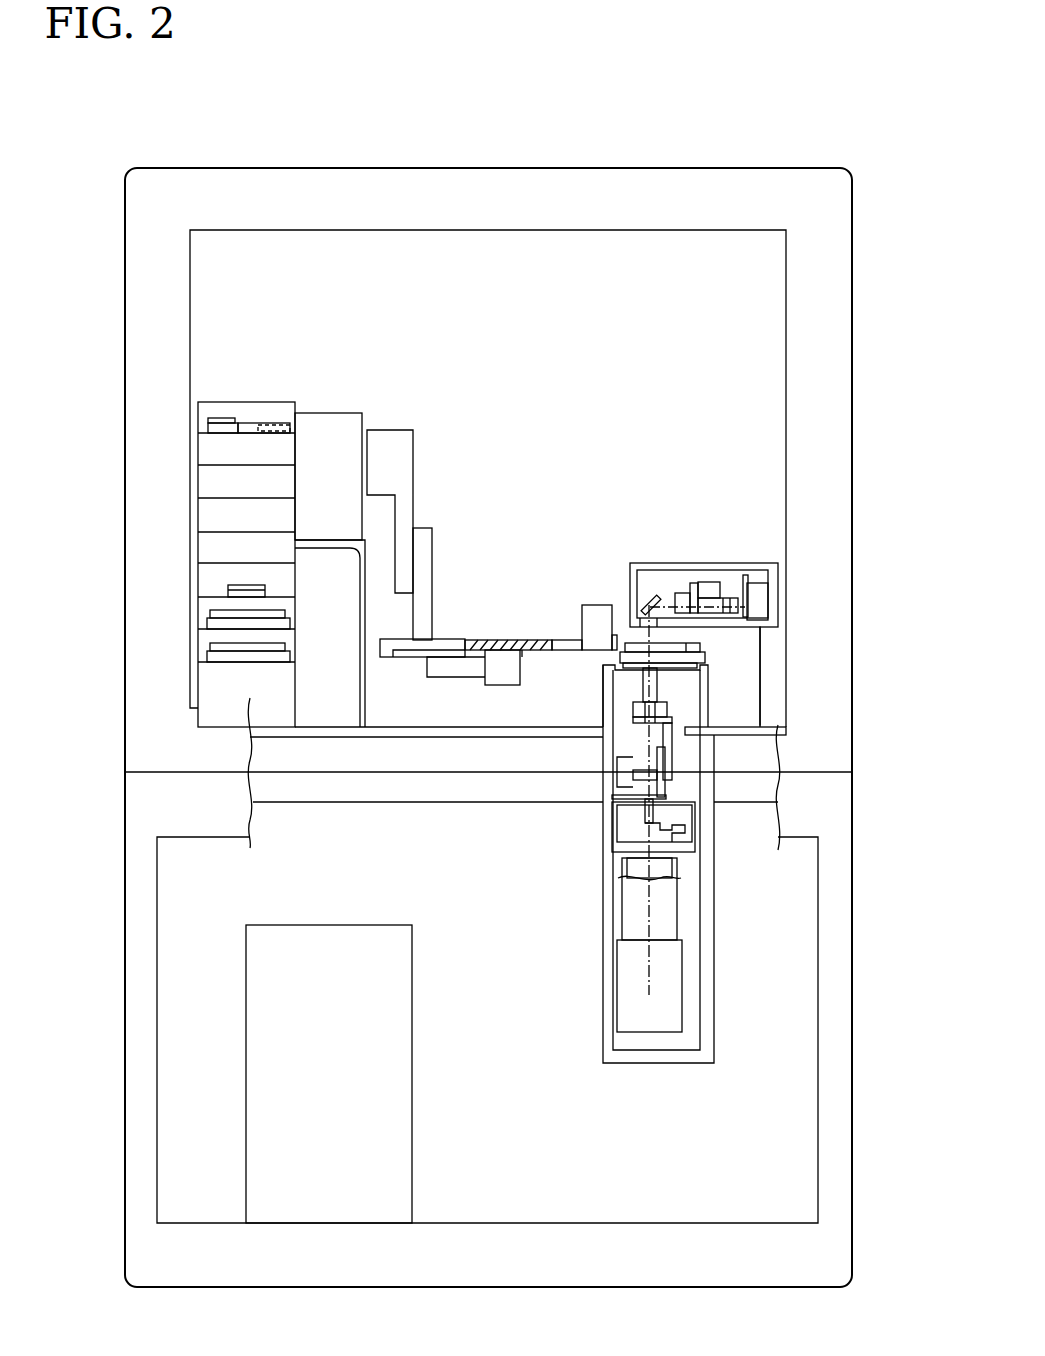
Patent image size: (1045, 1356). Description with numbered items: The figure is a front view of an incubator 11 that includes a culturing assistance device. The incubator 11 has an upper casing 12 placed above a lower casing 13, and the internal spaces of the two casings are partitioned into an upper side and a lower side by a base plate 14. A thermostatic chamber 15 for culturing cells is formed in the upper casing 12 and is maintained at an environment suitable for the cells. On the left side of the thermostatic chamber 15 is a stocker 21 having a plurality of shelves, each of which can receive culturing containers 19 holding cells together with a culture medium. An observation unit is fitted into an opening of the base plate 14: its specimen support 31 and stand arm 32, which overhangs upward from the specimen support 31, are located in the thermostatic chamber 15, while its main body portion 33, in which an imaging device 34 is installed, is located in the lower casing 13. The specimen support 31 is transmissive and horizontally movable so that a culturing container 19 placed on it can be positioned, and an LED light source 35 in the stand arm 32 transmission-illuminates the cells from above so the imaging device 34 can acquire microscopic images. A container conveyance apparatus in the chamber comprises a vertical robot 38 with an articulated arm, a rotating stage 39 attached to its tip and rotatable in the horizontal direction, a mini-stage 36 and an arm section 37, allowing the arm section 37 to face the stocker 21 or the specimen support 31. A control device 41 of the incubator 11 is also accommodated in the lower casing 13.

The incubator 11 is at (567, 118).
The upper casing 12 is at (754, 168).
The lower casing 13 is at (853, 1032).
The base plate 14 is at (403, 736).
The thermostatic chamber 15 is at (732, 335).
The culturing container 19 is at (228, 588).
The stocker 21 is at (228, 401).
The specimen support 31 is at (712, 662).
The stand arm 32 is at (710, 563).
The main body portion 33 is at (603, 897).
The imaging device 34 is at (677, 912).
The LED light source 35 is at (750, 589).
The mini-stage 36 is at (505, 639).
The arm section 37 is at (597, 605).
The vertical robot 38 is at (385, 430).
The rotating stage 39 is at (445, 639).
The control device 41 is at (413, 1145).